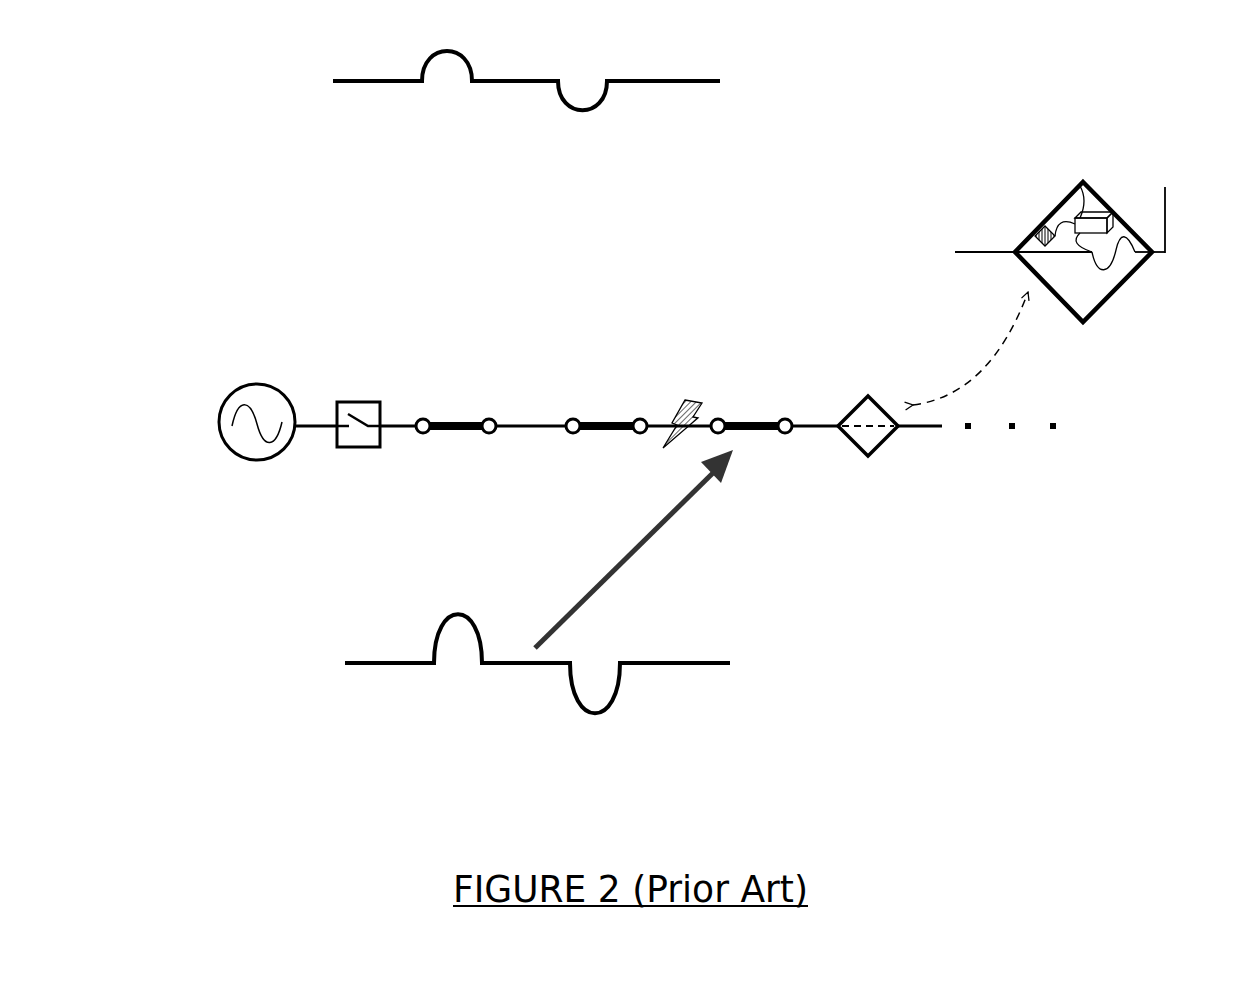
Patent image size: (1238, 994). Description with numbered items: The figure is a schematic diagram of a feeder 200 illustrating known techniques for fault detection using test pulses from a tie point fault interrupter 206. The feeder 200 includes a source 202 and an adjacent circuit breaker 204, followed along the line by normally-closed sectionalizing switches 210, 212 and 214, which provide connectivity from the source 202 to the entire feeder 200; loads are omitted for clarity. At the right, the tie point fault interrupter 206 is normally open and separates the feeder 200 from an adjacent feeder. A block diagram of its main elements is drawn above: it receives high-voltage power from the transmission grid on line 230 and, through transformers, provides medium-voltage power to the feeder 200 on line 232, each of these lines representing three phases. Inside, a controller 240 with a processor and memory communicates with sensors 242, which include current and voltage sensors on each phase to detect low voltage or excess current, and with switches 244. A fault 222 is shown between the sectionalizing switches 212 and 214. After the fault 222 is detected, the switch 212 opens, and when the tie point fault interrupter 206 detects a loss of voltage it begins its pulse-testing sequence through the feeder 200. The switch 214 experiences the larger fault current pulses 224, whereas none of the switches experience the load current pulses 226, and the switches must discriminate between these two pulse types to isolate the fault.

The feeder 200 is at (262, 210).
The source 202 is at (276, 460).
The circuit breaker 204 is at (336, 414).
The tie point fault interrupter 206 is at (840, 422).
The sectionalizing switch 210 is at (437, 419).
The sectionalizing switch 212 is at (587, 419).
The sectionalizing switch 214 is at (734, 419).
The fault 222 is at (683, 404).
The fault current pulses 224 is at (380, 691).
The load current pulses 226 is at (288, 75).
The line 230 is at (1164, 202).
The line 232 is at (968, 252).
The controller 240 is at (1080, 186).
The sensors 242 is at (1038, 230).
The switches 244 is at (1069, 260).